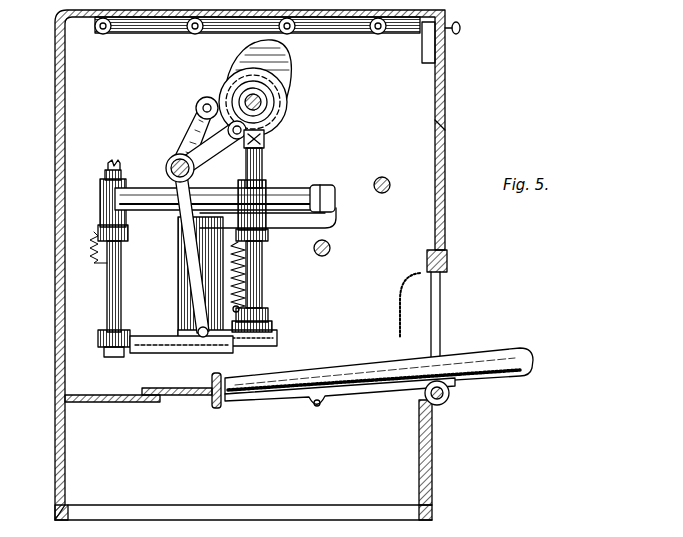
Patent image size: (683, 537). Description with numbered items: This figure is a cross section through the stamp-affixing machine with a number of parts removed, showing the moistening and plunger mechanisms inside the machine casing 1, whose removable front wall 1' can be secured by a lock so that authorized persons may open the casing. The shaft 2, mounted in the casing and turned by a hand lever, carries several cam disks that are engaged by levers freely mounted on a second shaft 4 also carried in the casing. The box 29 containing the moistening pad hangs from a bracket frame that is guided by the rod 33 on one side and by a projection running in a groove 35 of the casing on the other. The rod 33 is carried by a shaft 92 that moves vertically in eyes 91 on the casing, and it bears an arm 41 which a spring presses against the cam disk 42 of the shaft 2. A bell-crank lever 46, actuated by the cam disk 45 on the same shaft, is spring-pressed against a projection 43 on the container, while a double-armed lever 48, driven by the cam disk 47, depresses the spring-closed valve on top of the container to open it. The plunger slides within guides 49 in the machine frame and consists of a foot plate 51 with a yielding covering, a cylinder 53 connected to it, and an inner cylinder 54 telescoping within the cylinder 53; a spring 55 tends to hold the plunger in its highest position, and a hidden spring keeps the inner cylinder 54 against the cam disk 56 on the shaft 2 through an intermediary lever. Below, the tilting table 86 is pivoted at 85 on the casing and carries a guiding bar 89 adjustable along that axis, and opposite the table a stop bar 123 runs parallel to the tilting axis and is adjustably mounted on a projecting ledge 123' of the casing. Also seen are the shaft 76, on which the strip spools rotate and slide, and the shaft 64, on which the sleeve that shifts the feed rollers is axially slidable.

The machine casing 1 is at (257, 265).
The front wall 1' is at (424, 131).
The shaft 2 is at (263, 88).
The shaft 4 is at (167, 165).
The box 29 is at (190, 312).
The rod 33 is at (152, 194).
The groove 35 is at (150, 346).
The arm 41 is at (240, 174).
The cam disk 42 is at (288, 106).
The projection 43 is at (205, 346).
The cam disk 45 is at (280, 86).
The bell-crank lever 46 is at (196, 264).
The cam disk 47 is at (205, 97).
The double-armed lever 48 is at (196, 126).
The guides 49 is at (268, 235).
The foot plate 51 is at (273, 330).
The cylinder 53 is at (256, 288).
The cylinder 54 is at (263, 166).
The spring 55 is at (244, 272).
The cam disk 56 is at (280, 58).
The shaft 64 is at (329, 246).
The shaft 76 is at (385, 179).
The pivot 85 is at (448, 400).
The tilting table 86 is at (270, 400).
The guiding bar 89 is at (487, 352).
The eyes 91 is at (130, 235).
The shaft 92 is at (118, 296).
The stop bar 123 is at (181, 398).
The ledge 123' is at (112, 409).